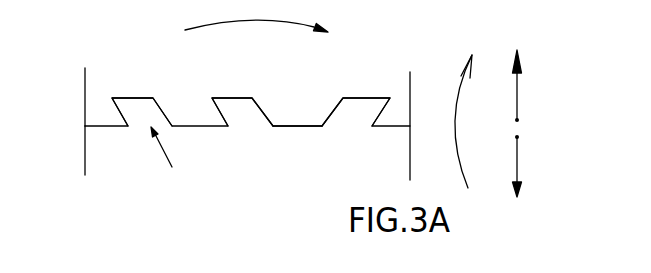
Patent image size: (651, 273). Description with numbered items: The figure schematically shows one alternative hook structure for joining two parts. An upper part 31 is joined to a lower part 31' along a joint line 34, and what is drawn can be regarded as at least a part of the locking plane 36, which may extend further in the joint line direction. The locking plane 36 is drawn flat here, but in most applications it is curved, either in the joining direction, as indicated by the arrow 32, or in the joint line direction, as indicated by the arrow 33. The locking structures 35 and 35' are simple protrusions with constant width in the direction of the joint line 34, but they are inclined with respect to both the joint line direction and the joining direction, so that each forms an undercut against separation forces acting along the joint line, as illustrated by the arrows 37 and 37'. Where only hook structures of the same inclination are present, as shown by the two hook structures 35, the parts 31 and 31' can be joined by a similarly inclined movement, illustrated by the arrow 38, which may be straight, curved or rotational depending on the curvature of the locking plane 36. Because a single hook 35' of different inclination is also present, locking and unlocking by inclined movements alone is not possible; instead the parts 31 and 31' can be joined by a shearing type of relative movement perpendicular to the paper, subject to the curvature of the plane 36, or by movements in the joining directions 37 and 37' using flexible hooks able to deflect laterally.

The upper part 31 is at (72, 97).
The lower part 31' is at (72, 150).
The arrow indicating curvature in the joining direction 32 is at (461, 166).
The arrow indicating curvature in the joint line direction 33 is at (257, 20).
The joint line 34 is at (302, 127).
The locking structure 35 is at (192, 95).
The locking structure of different inclination 35' is at (356, 94).
The locking plane 36 is at (259, 164).
The arrow indicating separation force / joining direction 37 is at (539, 86).
The arrow indicating opposite separation force / joining direction 37' is at (542, 166).
The arrow indicating inclined joining movement 38 is at (163, 158).